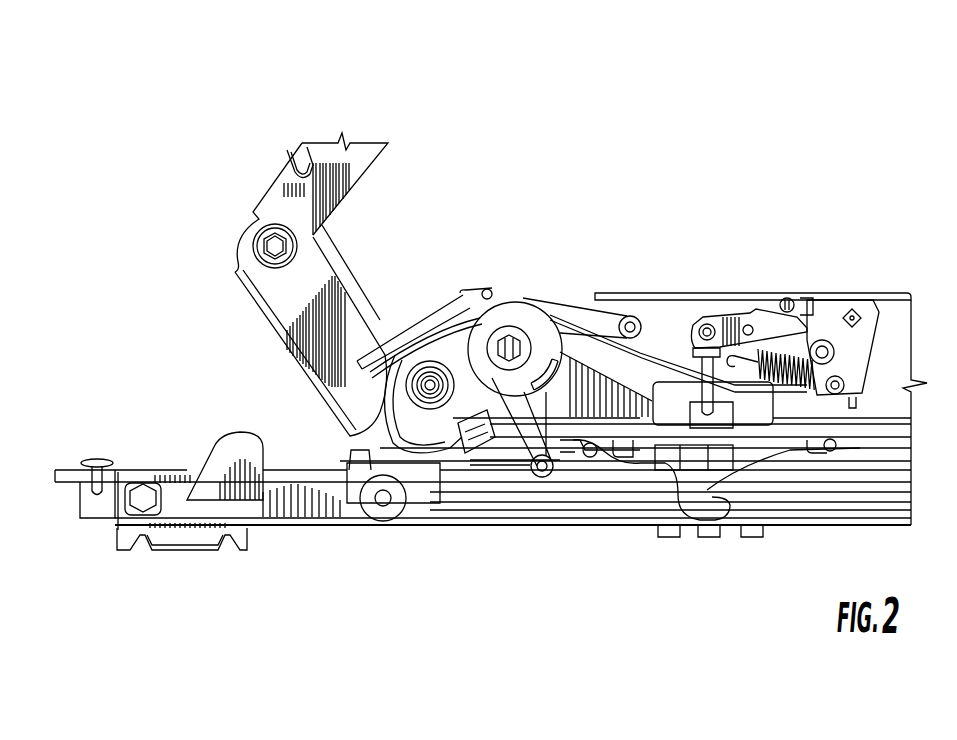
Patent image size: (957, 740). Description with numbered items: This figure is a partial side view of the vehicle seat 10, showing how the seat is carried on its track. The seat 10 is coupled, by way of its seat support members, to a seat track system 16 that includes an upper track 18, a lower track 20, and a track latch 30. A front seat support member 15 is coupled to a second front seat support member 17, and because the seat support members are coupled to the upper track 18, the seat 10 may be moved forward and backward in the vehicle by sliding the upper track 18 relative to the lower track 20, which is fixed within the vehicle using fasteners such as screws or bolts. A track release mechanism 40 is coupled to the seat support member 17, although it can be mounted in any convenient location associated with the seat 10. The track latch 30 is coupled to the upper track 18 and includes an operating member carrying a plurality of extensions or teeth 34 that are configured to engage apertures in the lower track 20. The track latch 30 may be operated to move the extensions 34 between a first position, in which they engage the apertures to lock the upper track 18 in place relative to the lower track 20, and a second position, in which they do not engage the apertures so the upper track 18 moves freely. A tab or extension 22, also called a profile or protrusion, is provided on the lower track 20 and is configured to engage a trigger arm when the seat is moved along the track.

The seat 10 is at (223, 128).
The front seat support member 15 is at (360, 153).
The seat track system 16 is at (389, 554).
The second front seat support member 17 is at (277, 305).
The upper track 18 is at (490, 453).
The lower track 20 is at (286, 497).
The tab 22 is at (230, 443).
The track latch 30 is at (829, 285).
The extensions 34 is at (668, 537).
The track release mechanism 40 is at (528, 285).